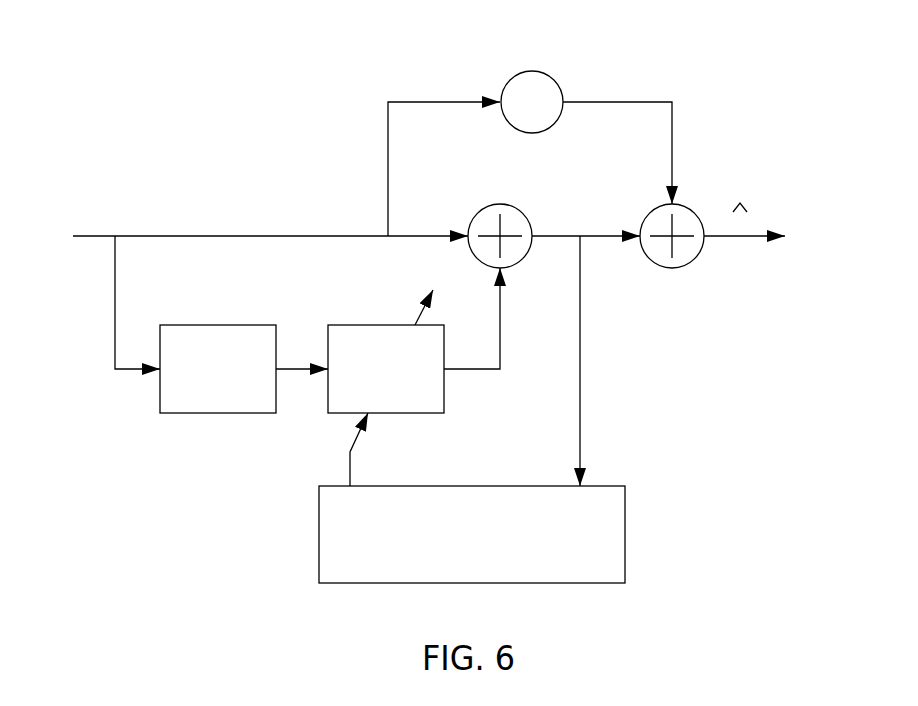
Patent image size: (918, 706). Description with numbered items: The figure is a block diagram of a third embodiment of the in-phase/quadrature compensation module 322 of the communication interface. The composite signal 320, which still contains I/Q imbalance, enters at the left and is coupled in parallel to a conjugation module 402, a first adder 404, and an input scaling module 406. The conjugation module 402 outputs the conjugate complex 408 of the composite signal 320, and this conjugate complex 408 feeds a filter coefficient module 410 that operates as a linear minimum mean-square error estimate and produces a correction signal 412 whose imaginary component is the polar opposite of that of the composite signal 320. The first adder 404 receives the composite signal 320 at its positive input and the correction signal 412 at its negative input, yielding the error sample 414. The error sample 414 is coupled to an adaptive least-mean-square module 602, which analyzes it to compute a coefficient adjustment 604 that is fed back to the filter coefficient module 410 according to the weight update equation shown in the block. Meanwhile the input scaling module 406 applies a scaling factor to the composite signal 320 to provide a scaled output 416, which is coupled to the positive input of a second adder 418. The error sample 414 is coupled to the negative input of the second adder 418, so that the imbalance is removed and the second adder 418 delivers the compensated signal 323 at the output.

The composite signal 320 is at (83, 235).
The in-phase/quadrature compensation module 322 is at (198, 50).
The compensated signal 323 is at (755, 242).
The conjugation module 402 is at (172, 402).
The first adder 404 is at (485, 218).
The input scaling module 406 is at (532, 85).
The conjugate complex 408 is at (299, 373).
The filter coefficient module 410 is at (388, 333).
The correction signal 412 is at (502, 372).
The error sample 414 is at (580, 294).
The scaled output 416 is at (670, 100).
The second adder 418 is at (660, 215).
The adaptive least-mean-square module 602 is at (595, 570).
The coefficient adjustment 604 is at (347, 467).